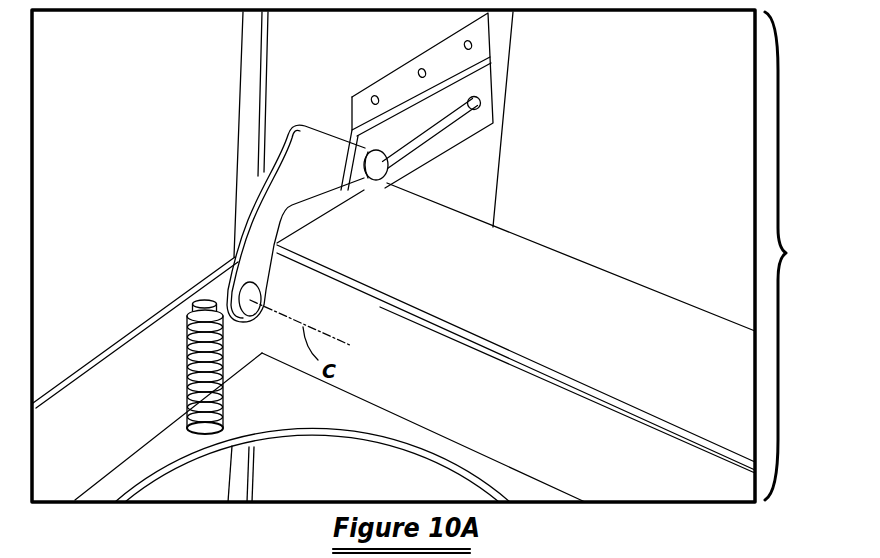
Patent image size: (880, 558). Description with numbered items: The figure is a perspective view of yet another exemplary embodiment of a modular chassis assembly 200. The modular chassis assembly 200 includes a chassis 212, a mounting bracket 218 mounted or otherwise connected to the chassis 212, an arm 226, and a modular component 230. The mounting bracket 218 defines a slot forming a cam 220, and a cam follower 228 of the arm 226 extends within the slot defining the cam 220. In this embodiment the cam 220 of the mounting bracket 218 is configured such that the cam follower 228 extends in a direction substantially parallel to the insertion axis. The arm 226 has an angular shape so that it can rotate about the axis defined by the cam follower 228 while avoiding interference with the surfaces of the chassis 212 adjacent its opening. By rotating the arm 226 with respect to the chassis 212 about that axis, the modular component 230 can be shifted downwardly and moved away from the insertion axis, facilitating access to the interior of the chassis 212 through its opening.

The modular chassis assembly 200 is at (792, 256).
The chassis 212 is at (352, 51).
The mounting bracket 218 is at (442, 140).
The cam 220 is at (422, 132).
The arm 226 is at (307, 147).
The cam follower 228 is at (383, 183).
The modular component 230 is at (106, 436).